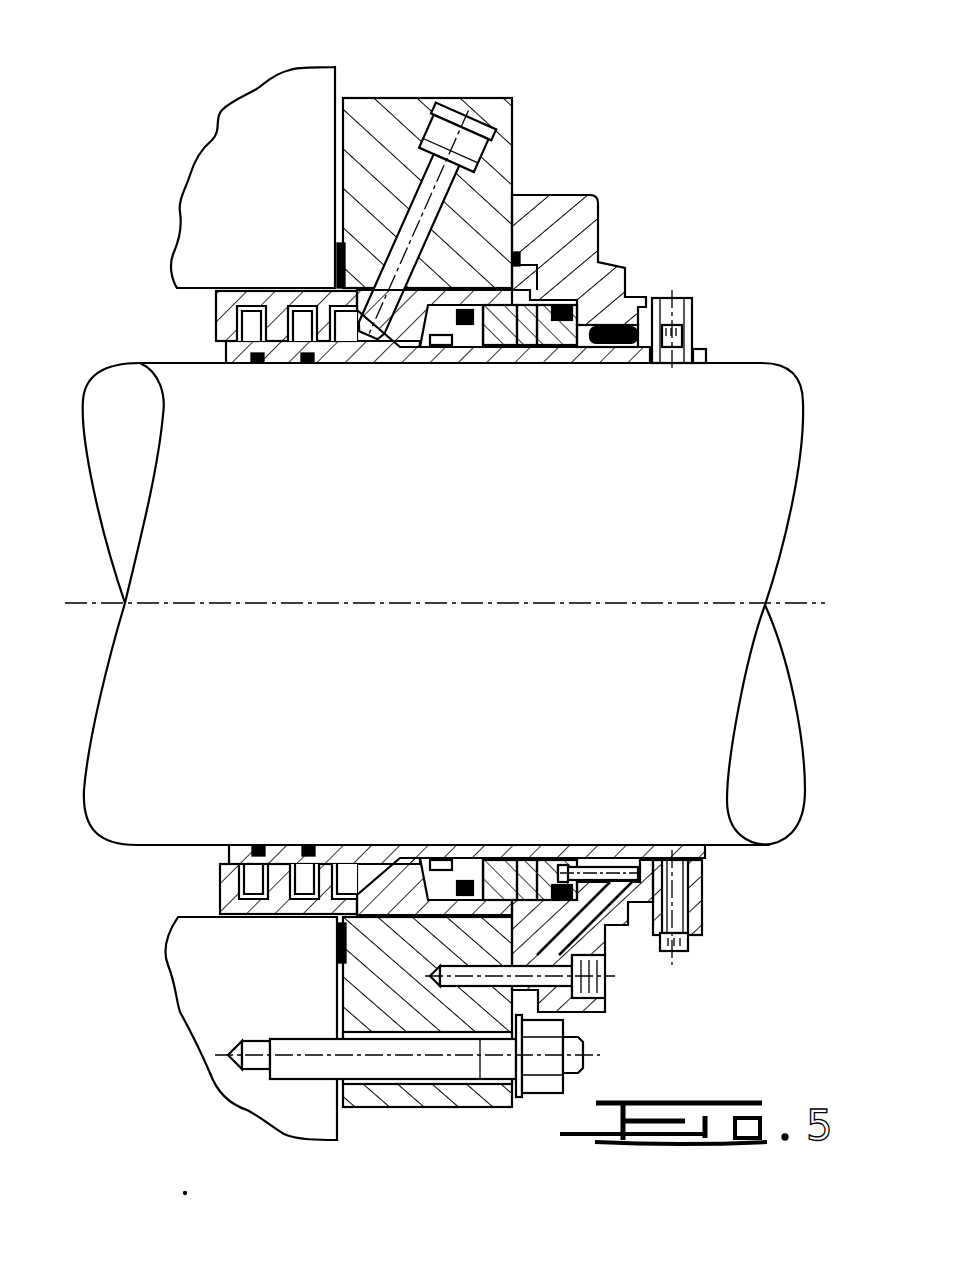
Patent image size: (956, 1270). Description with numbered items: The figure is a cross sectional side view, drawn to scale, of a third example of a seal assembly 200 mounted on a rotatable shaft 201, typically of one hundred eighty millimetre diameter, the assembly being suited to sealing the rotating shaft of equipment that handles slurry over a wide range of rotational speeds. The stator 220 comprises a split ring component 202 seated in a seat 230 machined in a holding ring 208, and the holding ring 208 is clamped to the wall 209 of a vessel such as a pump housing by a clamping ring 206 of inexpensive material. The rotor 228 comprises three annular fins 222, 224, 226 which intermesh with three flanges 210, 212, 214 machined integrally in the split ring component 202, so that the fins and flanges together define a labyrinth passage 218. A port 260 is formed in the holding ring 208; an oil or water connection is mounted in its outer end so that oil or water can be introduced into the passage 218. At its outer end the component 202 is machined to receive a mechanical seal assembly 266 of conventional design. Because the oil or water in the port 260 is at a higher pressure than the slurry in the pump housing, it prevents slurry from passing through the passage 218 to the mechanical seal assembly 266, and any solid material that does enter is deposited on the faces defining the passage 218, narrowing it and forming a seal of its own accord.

The seal assembly 200 is at (432, 92).
The shaft 201 is at (752, 378).
The split ring component 202 is at (348, 870).
The clamping ring 206 is at (592, 210).
The holding ring 208 is at (400, 130).
The wall 209 is at (335, 128).
The flange 210 is at (205, 365).
The flange 212 is at (275, 365).
The flange 214 is at (327, 365).
The labyrinth passage 218 is at (373, 867).
The stator 220 is at (357, 217).
The annular fin 222 is at (235, 843).
The annular fin 224 is at (290, 845).
The annular fin 226 is at (373, 845).
The rotor 228 is at (370, 365).
The seat 230 is at (447, 872).
The port 260 is at (477, 132).
The mechanical seal assembly 266 is at (645, 438).